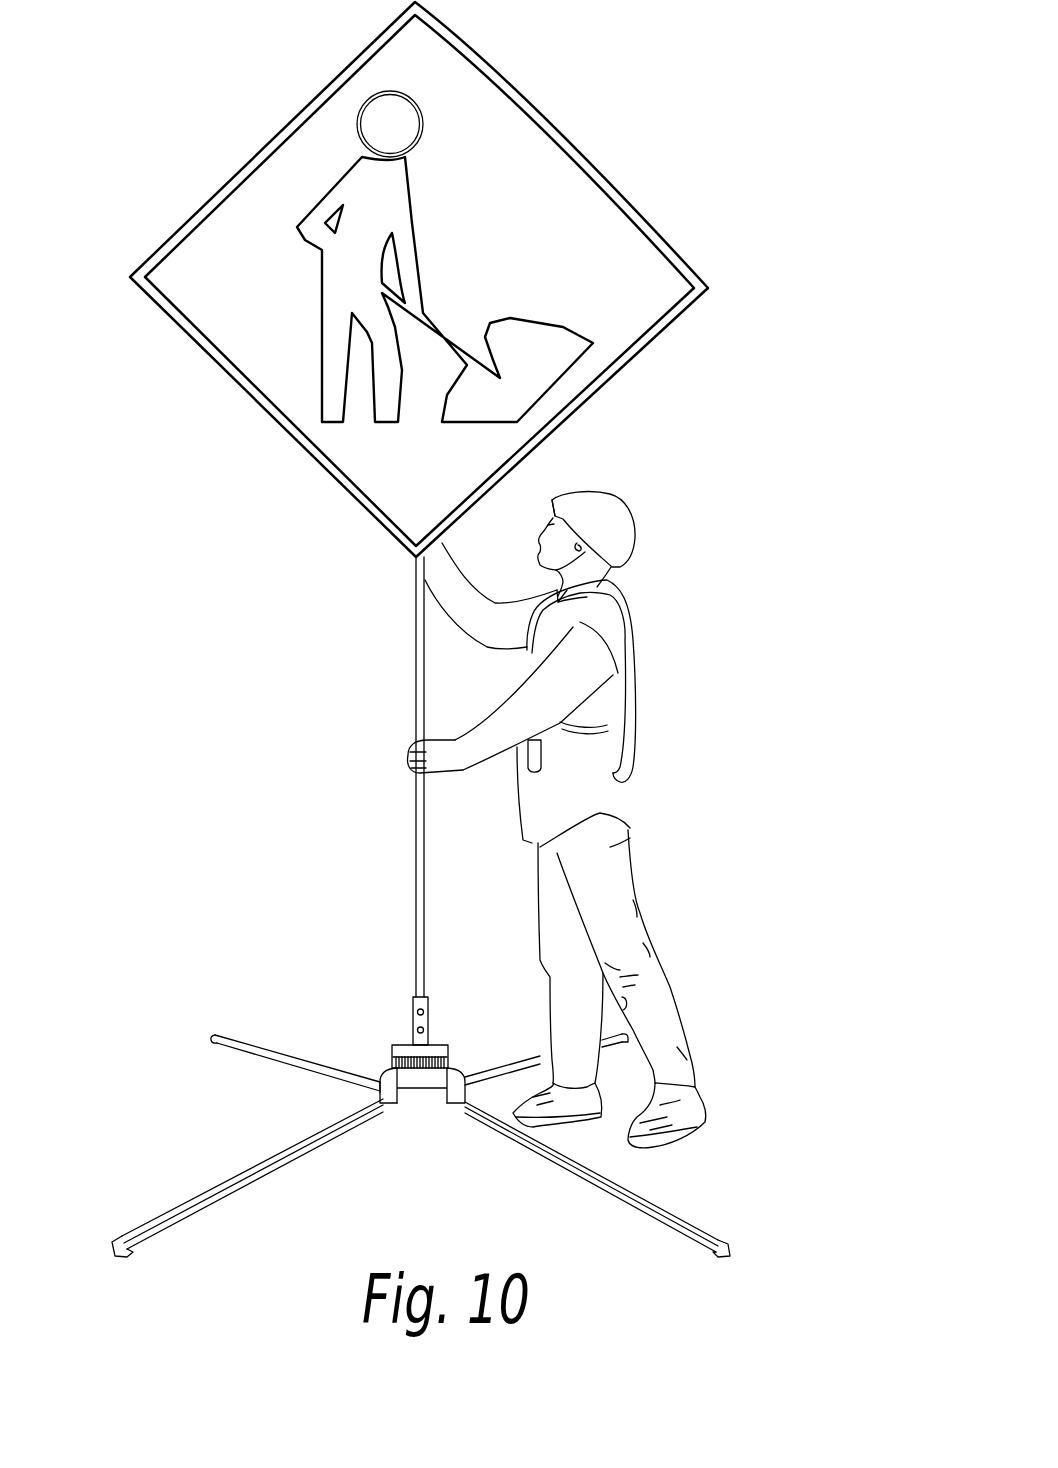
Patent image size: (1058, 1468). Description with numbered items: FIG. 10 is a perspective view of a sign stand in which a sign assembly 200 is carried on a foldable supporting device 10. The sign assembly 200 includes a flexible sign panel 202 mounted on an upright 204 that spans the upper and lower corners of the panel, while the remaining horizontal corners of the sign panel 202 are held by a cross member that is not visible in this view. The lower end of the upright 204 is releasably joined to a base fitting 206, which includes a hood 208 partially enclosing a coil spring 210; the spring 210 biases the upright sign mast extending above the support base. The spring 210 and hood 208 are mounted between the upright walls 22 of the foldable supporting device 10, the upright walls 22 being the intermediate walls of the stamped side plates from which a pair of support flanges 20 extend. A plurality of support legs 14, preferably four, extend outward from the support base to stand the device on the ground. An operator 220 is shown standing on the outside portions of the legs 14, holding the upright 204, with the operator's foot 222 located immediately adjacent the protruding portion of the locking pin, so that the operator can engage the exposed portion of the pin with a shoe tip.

The foldable supporting device 10 is at (421, 1106).
The support legs 14 is at (260, 1057).
The support flanges 20 is at (450, 1092).
The upright wall 22 is at (392, 1053).
The sign assembly 200 is at (448, 279).
The flexible sign panel 202 is at (645, 224).
The upright 204 is at (414, 628).
The base fitting 206 is at (412, 1010).
The hood 208 is at (437, 1046).
The coil spring 210 is at (405, 1057).
The operator 220 is at (591, 858).
The operator's foot 222 is at (575, 1128).